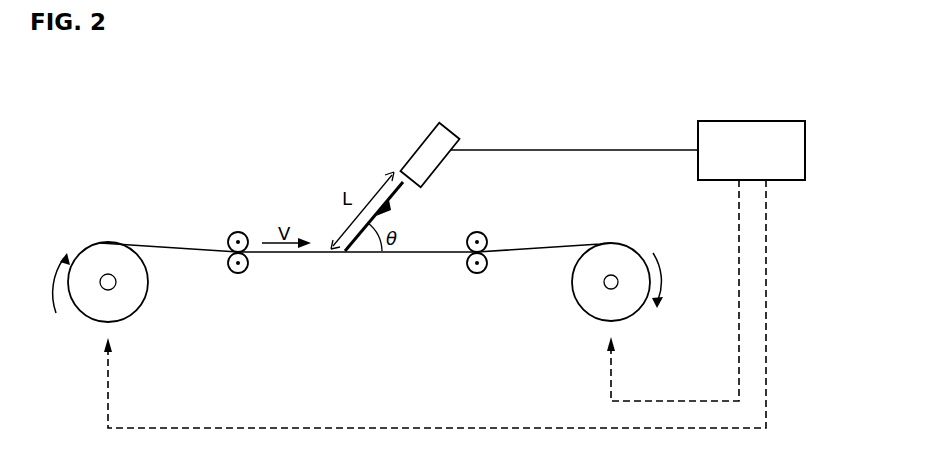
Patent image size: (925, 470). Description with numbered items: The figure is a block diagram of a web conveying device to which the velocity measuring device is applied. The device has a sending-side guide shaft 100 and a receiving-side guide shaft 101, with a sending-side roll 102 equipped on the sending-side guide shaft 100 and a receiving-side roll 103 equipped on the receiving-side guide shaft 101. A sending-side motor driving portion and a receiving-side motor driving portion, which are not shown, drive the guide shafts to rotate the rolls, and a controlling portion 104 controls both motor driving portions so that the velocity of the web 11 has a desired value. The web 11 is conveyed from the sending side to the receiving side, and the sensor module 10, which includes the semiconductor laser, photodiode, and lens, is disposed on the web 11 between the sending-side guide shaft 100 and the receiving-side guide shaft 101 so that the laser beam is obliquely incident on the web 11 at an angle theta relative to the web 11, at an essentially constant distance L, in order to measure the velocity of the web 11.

The sensor module 10 is at (430, 128).
The web 11 is at (192, 249).
The sending-side guide shaft 100 is at (114, 288).
The receiving-side guide shaft 101 is at (606, 289).
The sending-side roll 102 is at (100, 243).
The receiving-side roll 103 is at (614, 243).
The controlling portion 104 is at (727, 121).